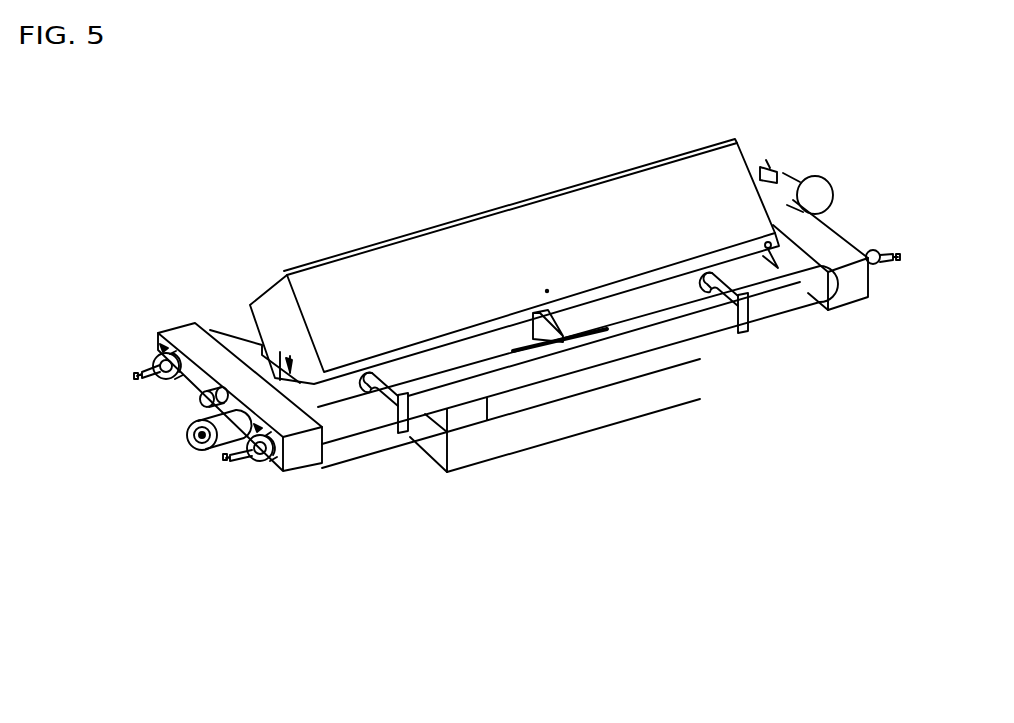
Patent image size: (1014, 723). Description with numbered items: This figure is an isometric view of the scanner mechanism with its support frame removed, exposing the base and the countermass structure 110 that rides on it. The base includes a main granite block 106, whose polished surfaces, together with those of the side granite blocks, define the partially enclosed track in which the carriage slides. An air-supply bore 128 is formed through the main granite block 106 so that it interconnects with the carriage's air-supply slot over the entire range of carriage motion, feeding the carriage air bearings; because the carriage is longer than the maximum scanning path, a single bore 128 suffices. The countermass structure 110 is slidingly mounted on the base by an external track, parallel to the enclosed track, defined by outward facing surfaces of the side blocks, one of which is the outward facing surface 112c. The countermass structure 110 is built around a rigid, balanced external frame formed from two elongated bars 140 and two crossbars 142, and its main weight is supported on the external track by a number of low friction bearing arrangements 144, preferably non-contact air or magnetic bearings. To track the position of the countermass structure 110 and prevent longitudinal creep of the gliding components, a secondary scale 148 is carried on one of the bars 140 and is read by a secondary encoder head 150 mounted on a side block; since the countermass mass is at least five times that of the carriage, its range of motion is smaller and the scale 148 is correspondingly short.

The main granite block 106 is at (587, 208).
The air-supply bore 128 is at (545, 284).
The secondary encoder head 150 is at (538, 320).
The outward facing surface 112c is at (636, 300).
The elongated bar 140 is at (346, 443).
The secondary scale 148 is at (603, 323).
The crossbar 142 is at (290, 462).
The low friction bearing arrangement 144 is at (386, 437).
The countermass structure 110 is at (792, 312).